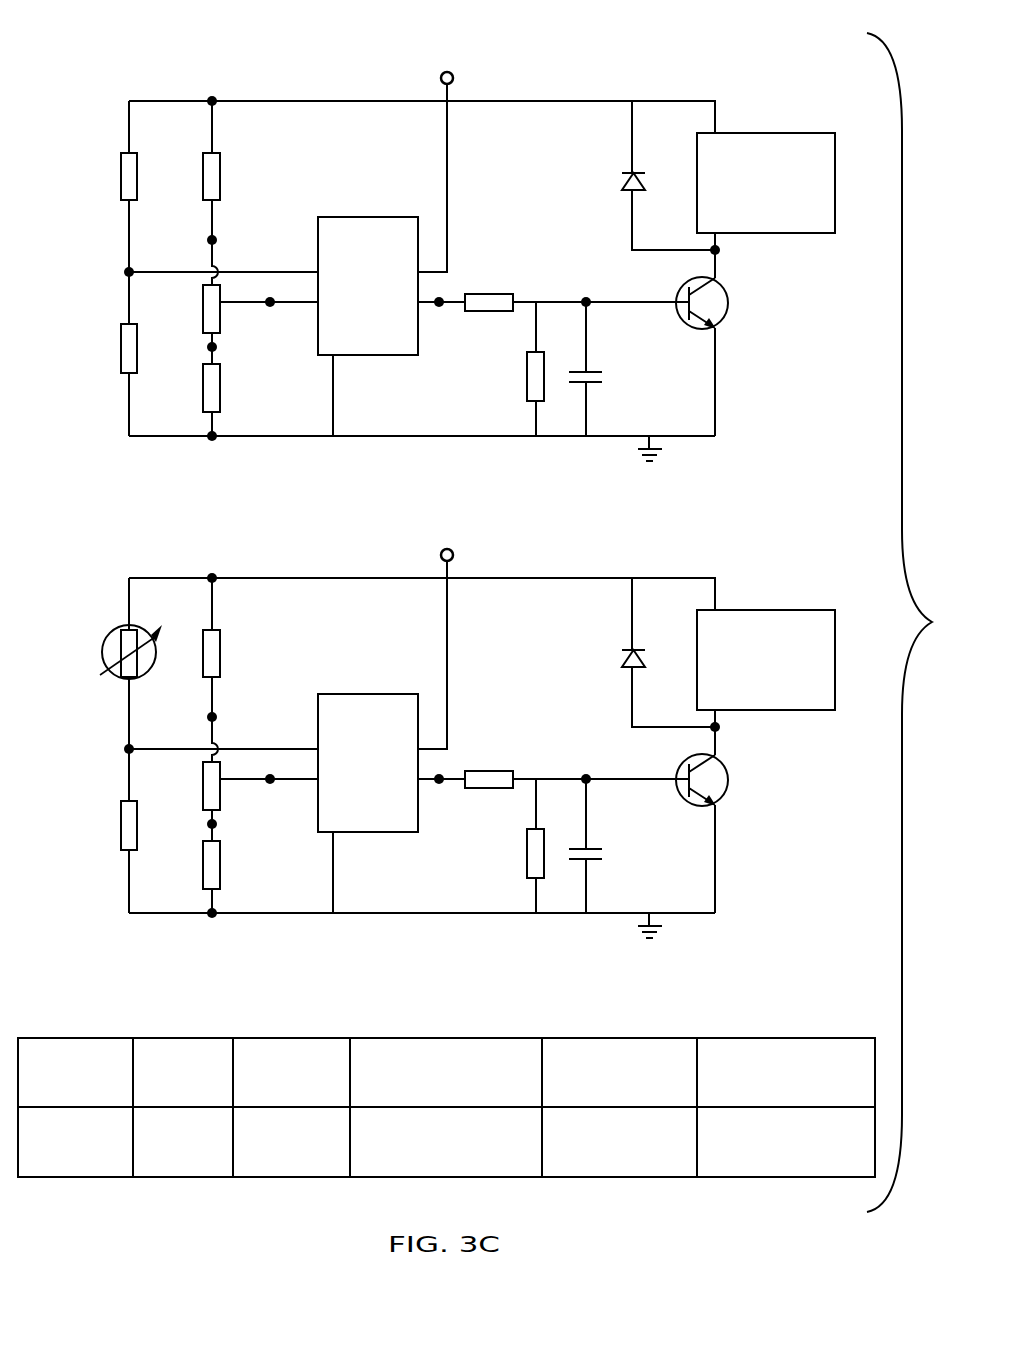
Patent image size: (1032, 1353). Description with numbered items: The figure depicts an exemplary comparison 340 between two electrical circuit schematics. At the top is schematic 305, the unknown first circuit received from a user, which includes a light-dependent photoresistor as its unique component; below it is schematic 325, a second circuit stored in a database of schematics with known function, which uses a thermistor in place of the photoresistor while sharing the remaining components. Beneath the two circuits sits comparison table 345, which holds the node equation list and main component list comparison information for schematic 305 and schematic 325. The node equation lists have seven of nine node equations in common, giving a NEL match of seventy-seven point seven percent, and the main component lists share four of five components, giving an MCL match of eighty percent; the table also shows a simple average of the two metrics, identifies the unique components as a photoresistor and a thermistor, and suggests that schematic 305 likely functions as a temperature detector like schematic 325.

The comparison 340 is at (132, 46).
The schematic 305 is at (129, 417).
The schematic 325 is at (129, 894).
The comparison table 345 is at (400, 1038).